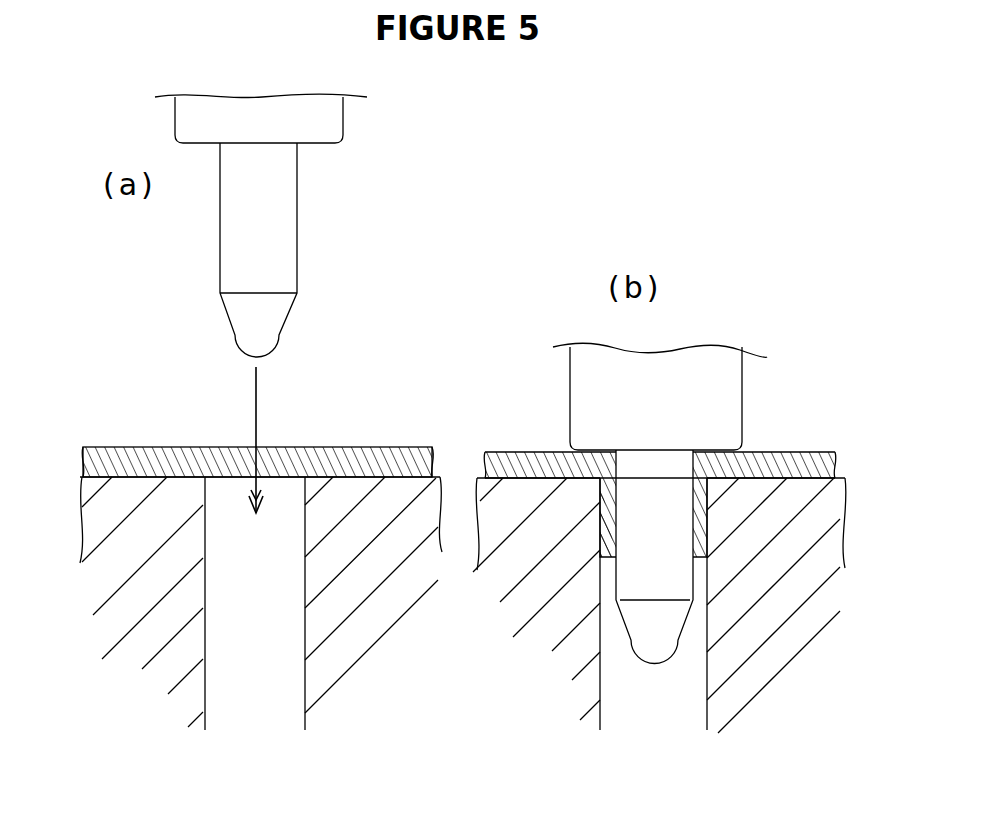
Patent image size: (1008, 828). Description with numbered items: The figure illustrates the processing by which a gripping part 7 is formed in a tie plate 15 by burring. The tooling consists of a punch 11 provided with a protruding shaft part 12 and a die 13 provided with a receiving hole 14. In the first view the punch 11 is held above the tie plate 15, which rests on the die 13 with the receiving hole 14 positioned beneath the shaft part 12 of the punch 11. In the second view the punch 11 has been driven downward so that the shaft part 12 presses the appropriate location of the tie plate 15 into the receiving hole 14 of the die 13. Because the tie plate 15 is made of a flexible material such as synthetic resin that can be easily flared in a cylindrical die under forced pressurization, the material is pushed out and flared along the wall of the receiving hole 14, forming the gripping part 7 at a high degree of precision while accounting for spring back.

The punch 11 is at (301, 218).
The protruding shaft part 12 is at (273, 270).
The die 13 is at (135, 598).
The receiving hole 14 is at (205, 573).
The tie plate 15 is at (347, 453).
The gripping part 7 is at (618, 522).